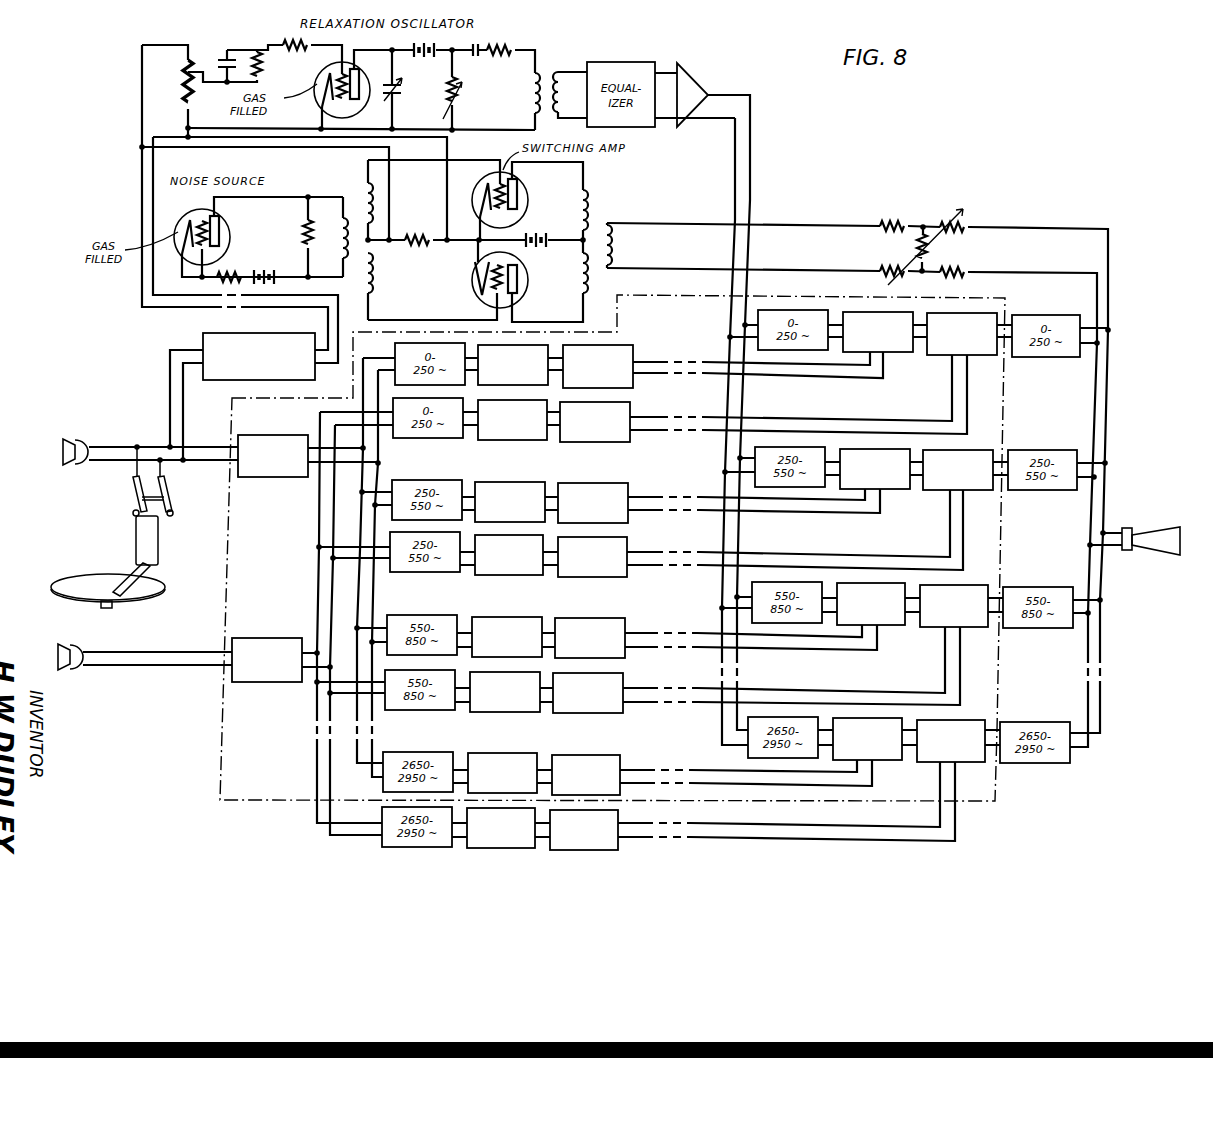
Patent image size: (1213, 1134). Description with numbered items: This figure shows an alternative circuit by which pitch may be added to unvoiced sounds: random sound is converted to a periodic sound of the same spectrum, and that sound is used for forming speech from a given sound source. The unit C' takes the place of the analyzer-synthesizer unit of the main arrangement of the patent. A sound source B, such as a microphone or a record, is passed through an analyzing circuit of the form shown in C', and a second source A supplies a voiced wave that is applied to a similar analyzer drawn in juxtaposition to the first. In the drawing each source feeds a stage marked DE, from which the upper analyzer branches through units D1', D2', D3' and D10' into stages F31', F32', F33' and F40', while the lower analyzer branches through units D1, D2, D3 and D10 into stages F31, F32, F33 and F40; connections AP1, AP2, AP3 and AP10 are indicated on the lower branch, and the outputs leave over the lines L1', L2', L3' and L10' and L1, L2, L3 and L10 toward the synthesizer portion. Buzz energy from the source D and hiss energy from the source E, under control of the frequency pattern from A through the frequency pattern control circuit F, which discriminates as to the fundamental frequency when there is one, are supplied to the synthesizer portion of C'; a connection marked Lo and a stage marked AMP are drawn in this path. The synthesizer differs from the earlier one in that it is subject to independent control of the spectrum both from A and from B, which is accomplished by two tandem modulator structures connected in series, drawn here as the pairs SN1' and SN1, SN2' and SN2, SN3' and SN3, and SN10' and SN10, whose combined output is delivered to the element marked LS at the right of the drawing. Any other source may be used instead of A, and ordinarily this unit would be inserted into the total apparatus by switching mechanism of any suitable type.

The source of speech or music A is at (74, 467).
The second source of sound B is at (70, 672).
The analyzer-synthesizer unit C' is at (604, 561).
The source of buzz noise D is at (570, 79).
The source of hiss noise E is at (615, 224).
The frequency pattern control circuit F is at (259, 356).
The line Lo to network F Lo is at (310, 306).
The detector DE is at (270, 558).
The amplifier AMP is at (687, 68).
The loudspeaker L.S. LS is at (1135, 531).
The amplifier connection AP1 is at (473, 413).
The amplifier connection AP2 is at (470, 553).
The amplifier connection AP3 is at (467, 689).
The amplifier connection AP10 is at (466, 824).
The line L1' is at (758, 357).
The line L1 is at (798, 394).
The line L2' is at (754, 492).
The line L2 is at (795, 530).
The line L3' is at (751, 628).
The line L3 is at (791, 666).
The line L10' is at (746, 766).
The line L10 is at (786, 815).
The detector D1' is at (513, 365).
The detector D1 is at (512, 420).
The detector D2' is at (510, 502).
The detector D2 is at (509, 555).
The detector D3' is at (507, 637).
The detector D3 is at (505, 692).
The detector D10' is at (502, 773).
The detector D10 is at (501, 828).
The filter F31' is at (598, 366).
The filter F31 is at (595, 422).
The filter F32' is at (593, 503).
The filter F32 is at (592, 557).
The filter F33' is at (590, 638).
The filter F33 is at (588, 693).
The filter F40' is at (586, 775).
The filter F40 is at (584, 830).
The modulator structure SN1' is at (878, 332).
The modulator structure SN1 is at (962, 334).
The modulator structure SN2' is at (875, 469).
The modulator structure SN2 is at (958, 470).
The modulator structure SN3' is at (871, 604).
The modulator structure SN3 is at (954, 606).
The modulator structure SN10' is at (867, 739).
The modulator structure SN10 is at (951, 741).